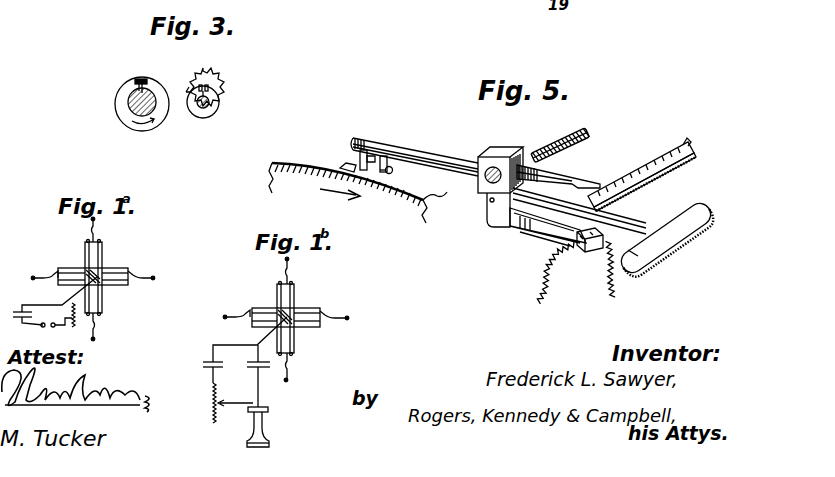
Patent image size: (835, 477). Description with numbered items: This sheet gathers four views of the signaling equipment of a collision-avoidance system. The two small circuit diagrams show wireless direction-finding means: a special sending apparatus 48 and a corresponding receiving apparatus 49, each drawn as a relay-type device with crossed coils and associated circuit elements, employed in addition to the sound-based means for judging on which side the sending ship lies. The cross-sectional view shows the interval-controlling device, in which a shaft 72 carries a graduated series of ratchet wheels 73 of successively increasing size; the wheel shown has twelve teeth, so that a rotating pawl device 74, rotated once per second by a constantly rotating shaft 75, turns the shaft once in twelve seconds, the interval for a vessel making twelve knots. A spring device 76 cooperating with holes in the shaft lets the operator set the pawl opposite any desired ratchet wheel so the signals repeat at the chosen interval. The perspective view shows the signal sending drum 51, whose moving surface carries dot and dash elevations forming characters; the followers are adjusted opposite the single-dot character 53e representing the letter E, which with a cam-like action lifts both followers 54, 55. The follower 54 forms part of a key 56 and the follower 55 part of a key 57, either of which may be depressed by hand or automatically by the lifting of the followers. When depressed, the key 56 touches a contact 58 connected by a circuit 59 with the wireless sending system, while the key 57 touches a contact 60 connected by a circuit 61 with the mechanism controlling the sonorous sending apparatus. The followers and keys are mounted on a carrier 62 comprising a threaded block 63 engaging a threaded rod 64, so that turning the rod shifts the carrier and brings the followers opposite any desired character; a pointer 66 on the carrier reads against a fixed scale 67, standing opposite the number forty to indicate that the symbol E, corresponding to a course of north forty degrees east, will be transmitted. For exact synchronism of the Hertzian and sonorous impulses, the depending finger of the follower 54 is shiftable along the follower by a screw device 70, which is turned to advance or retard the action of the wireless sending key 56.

In FIG. 1A, the special sending apparatus 48 is at (84, 279).
In FIG. 1B, the receiving apparatus 49 is at (276, 352).
In FIG. 3, the shaft 72 is at (212, 106).
In FIG. 3, the ratchet wheels 73 is at (227, 80).
In FIG. 3, the rotating pawl device 74 is at (170, 108).
In FIG. 3, the constantly rotating shaft 75 is at (128, 110).
In FIG. 3, the spring device 76 is at (137, 79).
In FIG. 5, the signal sending drum 51 is at (313, 160).
In FIG. 5, the character E 53e is at (343, 164).
In FIG. 5, the follower 54 is at (357, 148).
In FIG. 5, the follower 55 is at (368, 142).
In FIG. 5, the screw device 70 is at (389, 176).
In FIG. 5, the threaded block 63 is at (501, 157).
In FIG. 5, the carrier 62 is at (490, 210).
In FIG. 5, the contact 60 is at (632, 216).
In FIG. 5, the threaded rod 64 is at (565, 136).
In FIG. 5, the pointer 66 is at (580, 180).
In FIG. 5, the fixed scale 67 is at (677, 127).
In FIG. 5, the key 57 is at (688, 220).
In FIG. 5, the key 56 is at (653, 246).
In FIG. 5, the contact 58 is at (575, 238).
In FIG. 5, the circuit 59 is at (544, 274).
In FIG. 5, the circuit 61 is at (609, 287).